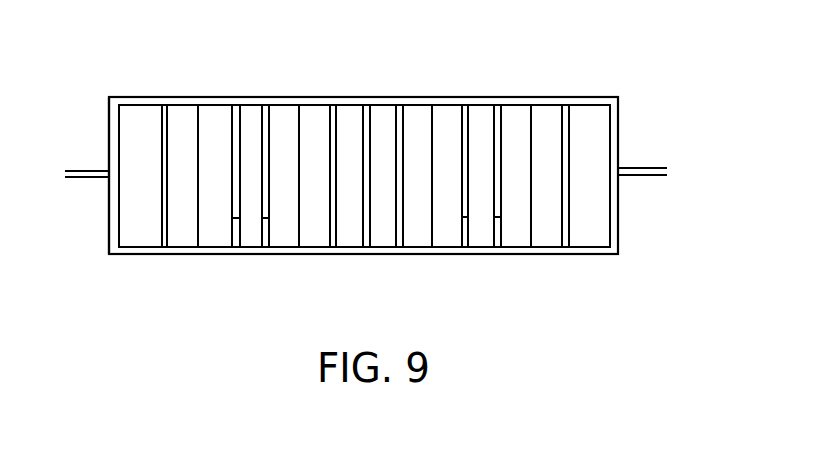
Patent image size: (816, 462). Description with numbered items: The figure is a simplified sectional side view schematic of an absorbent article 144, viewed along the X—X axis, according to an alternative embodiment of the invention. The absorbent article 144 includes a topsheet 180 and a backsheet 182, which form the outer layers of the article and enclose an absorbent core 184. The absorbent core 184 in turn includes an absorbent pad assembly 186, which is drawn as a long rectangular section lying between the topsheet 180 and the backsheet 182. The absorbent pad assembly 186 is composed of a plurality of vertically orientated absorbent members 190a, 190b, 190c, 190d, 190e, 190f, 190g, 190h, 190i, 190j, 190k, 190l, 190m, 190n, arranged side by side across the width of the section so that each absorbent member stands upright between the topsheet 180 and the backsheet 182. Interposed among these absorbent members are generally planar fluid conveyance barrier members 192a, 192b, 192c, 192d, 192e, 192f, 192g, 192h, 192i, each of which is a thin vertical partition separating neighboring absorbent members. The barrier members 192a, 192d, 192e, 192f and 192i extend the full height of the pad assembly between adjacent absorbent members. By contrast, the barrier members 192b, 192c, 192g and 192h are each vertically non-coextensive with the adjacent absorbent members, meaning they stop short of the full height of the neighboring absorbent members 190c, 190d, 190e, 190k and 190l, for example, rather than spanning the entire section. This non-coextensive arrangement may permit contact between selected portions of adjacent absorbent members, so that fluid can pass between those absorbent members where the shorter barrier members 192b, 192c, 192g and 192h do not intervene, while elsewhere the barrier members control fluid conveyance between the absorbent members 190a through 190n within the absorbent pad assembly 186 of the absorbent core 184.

The absorbent article 144 is at (644, 70).
The topsheet 180 is at (110, 128).
The backsheet 182 is at (110, 237).
The absorbent core 184 is at (138, 227).
The absorbent pad assembly 186 is at (591, 240).
The absorbent member 190a is at (141, 123).
The absorbent member 190b is at (177, 120).
The absorbent member 190c is at (213, 118).
The absorbent member 190d is at (248, 118).
The absorbent member 190e is at (282, 120).
The absorbent member 190f is at (313, 118).
The absorbent member 190g is at (348, 120).
The absorbent member 190h is at (384, 120).
The absorbent member 190i is at (418, 120).
The absorbent member 190j is at (448, 120).
The absorbent member 190k is at (480, 120).
The absorbent member 190l is at (518, 120).
The absorbent member 190m is at (547, 126).
The absorbent member 190n is at (590, 122).
The fluid conveyance barrier member 192a is at (163, 250).
The fluid conveyance barrier member 192b is at (233, 218).
The fluid conveyance barrier member 192c is at (265, 220).
The fluid conveyance barrier member 192d is at (335, 253).
The fluid conveyance barrier member 192e is at (369, 253).
The fluid conveyance barrier member 192f is at (402, 253).
The fluid conveyance barrier member 192g is at (465, 220).
The fluid conveyance barrier member 192h is at (497, 220).
The fluid conveyance barrier member 192i is at (565, 253).